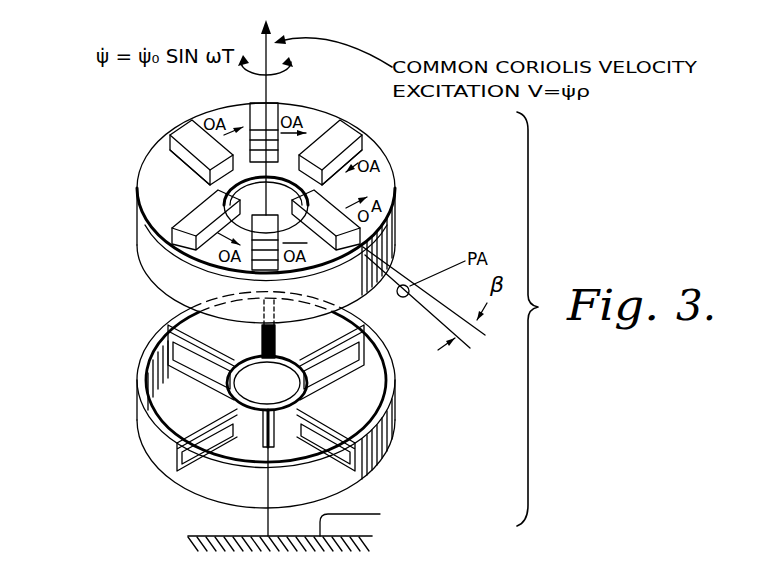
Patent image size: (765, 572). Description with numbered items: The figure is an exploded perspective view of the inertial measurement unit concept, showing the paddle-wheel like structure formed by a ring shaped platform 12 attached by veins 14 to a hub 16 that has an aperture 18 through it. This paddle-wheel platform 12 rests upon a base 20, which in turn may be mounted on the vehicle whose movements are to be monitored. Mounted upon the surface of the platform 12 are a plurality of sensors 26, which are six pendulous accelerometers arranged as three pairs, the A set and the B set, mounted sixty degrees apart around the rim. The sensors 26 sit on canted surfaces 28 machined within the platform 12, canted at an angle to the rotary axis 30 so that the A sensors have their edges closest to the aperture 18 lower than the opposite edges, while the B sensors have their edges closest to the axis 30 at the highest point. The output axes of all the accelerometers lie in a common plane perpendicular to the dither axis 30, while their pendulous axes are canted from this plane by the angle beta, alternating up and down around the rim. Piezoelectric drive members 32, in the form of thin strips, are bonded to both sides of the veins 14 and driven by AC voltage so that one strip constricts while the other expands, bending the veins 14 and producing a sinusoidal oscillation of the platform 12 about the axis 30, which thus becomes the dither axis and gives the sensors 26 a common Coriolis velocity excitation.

The ring shaped platform 12 is at (395, 190).
The veins 14 is at (178, 330).
The hub 16 is at (230, 394).
The aperture 18 is at (255, 403).
The base 20 is at (300, 526).
The sensors 26 is at (170, 140).
The canted surfaces 28 is at (185, 190).
The rotary axis 30 is at (262, 100).
The piezoelectric drive members 32 is at (340, 362).